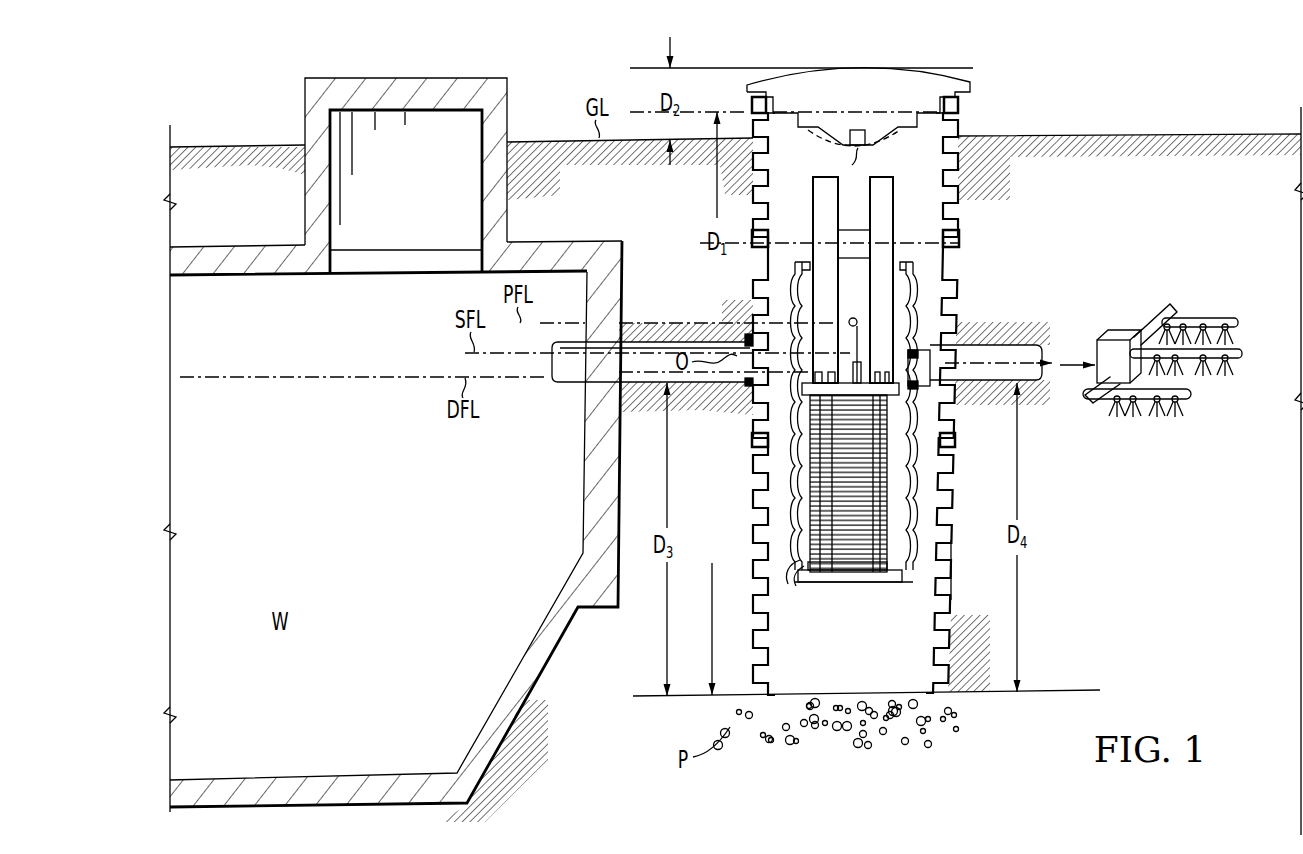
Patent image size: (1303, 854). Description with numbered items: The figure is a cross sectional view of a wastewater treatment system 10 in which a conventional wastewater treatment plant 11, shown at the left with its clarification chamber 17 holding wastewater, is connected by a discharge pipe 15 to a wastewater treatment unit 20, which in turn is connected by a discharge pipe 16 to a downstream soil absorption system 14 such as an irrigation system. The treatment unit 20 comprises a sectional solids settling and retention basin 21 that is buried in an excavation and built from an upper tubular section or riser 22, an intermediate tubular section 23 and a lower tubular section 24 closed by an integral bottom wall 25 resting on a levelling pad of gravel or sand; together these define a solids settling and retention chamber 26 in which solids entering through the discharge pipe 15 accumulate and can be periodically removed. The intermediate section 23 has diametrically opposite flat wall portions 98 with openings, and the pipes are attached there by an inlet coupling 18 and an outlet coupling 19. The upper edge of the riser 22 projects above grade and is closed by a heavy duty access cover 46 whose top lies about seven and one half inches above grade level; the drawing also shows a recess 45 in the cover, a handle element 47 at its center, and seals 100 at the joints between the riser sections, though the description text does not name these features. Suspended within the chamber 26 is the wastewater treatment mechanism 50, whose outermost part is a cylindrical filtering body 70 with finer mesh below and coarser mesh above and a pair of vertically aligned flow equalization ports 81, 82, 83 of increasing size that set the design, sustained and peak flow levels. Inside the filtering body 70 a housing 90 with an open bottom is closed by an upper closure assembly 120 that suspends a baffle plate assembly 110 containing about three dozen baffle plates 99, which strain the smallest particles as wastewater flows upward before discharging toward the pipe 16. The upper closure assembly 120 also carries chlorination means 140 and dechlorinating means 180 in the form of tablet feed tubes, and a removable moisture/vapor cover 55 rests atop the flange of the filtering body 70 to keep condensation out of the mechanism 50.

The wastewater treatment system 10 is at (595, 78).
The wastewater treatment plant 11 is at (513, 110).
The soil absorption system 14 is at (1210, 305).
The discharge pipe 15 is at (648, 362).
The discharge pipe 16 is at (1078, 365).
The clarification chamber 17 is at (396, 442).
The inlet coupling 18 is at (793, 397).
The outlet coupling 19 is at (935, 342).
The wastewater treatment unit 20 is at (864, 361).
The solids settling and retention basin 21 is at (983, 268).
The upper tubular section 22 is at (960, 130).
The intermediate tubular section 23 is at (960, 303).
The lower tubular section 24 is at (958, 559).
The bottom wall 25 is at (848, 693).
The solids settling and retention chamber 26 is at (832, 680).
The cover recess 45 is at (825, 127).
The access cover 46 is at (963, 76).
The cover handle 47 is at (853, 164).
The wastewater treatment mechanism 50 is at (957, 446).
The moisture/vapor cover 55 is at (903, 248).
The filtering body 70 is at (920, 490).
The flow equalization port 81 is at (857, 377).
The flow equalization port 82 is at (855, 350).
The flow equalization port 83 is at (853, 318).
The housing 90 is at (893, 527).
The flat wall portion 98 is at (730, 311).
The baffle plates 99 is at (800, 564).
The gasket 100 is at (968, 102).
The baffle plate assembly 110 is at (842, 575).
The upper closure assembly 120 is at (797, 392).
The chlorination means 140 is at (812, 190).
The dechlorinating means 180 is at (898, 190).